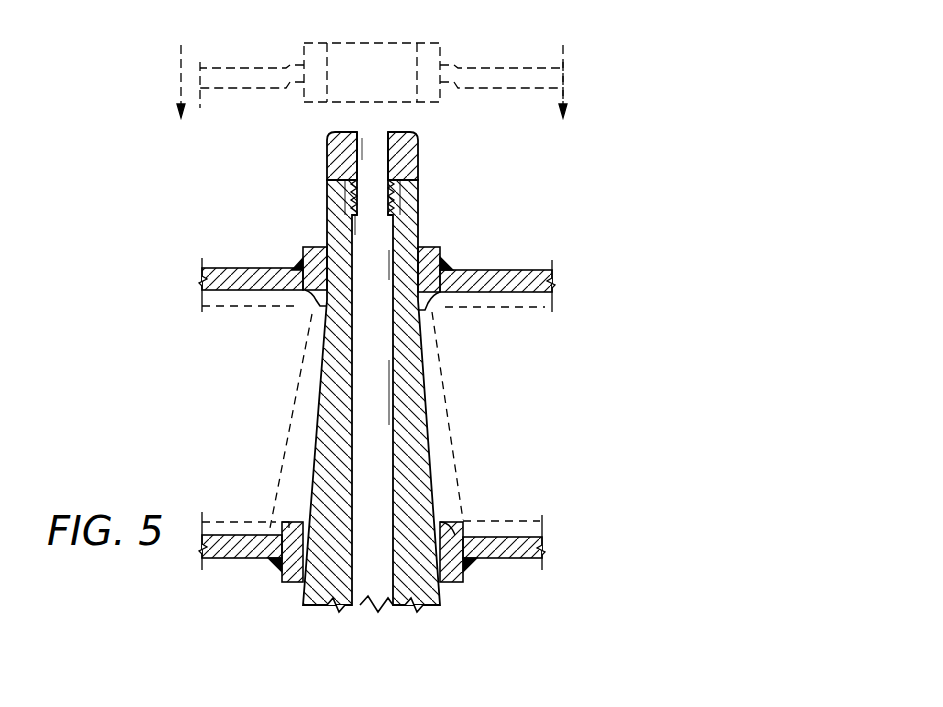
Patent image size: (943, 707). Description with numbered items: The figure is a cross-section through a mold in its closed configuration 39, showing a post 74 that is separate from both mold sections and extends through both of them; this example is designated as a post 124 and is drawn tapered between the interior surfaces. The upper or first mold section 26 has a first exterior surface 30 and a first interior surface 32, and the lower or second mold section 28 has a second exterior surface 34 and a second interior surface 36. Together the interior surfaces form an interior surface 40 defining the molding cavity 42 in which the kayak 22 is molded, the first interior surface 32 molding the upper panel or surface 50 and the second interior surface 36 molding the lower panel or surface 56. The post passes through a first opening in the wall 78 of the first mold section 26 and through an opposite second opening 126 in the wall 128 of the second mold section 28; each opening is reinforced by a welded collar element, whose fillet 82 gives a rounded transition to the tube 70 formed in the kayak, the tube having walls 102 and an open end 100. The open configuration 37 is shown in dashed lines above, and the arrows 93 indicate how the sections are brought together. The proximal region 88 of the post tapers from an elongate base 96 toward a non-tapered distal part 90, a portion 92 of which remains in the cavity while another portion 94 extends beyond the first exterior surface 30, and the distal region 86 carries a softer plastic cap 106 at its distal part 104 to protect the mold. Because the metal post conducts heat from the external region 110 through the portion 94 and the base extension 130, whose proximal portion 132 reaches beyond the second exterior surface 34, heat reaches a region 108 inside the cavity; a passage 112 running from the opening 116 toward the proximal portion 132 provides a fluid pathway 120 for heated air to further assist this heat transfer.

The kayak 22 is at (522, 310).
The first mold section 26 is at (534, 271).
The second mold section 28 is at (542, 558).
The first exterior surface 30 is at (450, 266).
The first interior surface 32 is at (446, 305).
The second exterior surface 34 is at (470, 578).
The second interior surface 36 is at (458, 532).
The open configuration 37 is at (138, 87).
The closed configuration 39 is at (108, 307).
The interior surface 40 is at (552, 292).
The molding cavity 42 is at (128, 440).
The upper panel or surface 50 is at (490, 316).
The lower panel or surface 56 is at (512, 520).
The tube 70 is at (434, 428).
The post 74 is at (345, 135).
The wall 78 is at (504, 270).
The fillet 82 is at (315, 307).
The distal region 86 is at (290, 177).
The proximal region 88 is at (190, 378).
The distal part 90 is at (290, 199).
The portion of the distal part 92 is at (310, 316).
The arrows 93 is at (178, 48).
The portion of the distal part 94 is at (296, 212).
The base 96 is at (295, 525).
The open end 100 is at (444, 346).
The walls 102 is at (437, 459).
The distal part 104 is at (419, 136).
The plastic cap 106 is at (419, 152).
The region 108 is at (266, 434).
The external region 110 is at (168, 155).
The passage 112 is at (366, 598).
The opening 116 is at (352, 130).
The fluid pathway 120 is at (387, 575).
The post 124 is at (327, 150).
The second opening 126 is at (454, 598).
The wall 128 is at (516, 560).
The base extension 130 is at (300, 592).
The proximal portion 132 is at (300, 608).